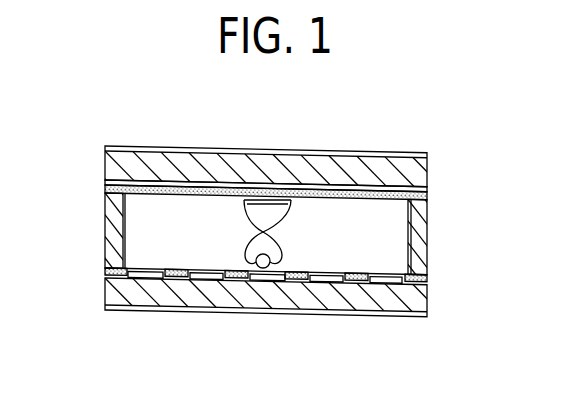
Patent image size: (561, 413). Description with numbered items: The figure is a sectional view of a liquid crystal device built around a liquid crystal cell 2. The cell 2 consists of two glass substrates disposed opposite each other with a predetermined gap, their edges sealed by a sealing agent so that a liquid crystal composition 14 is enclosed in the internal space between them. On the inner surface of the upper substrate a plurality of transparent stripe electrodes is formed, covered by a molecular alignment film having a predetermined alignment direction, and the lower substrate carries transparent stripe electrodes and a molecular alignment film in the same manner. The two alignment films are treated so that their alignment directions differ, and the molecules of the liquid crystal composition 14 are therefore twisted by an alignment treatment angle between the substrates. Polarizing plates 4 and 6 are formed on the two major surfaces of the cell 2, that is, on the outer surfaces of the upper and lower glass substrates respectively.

The liquid crystal cell 2 is at (100, 150).
The polarizing plate 4 is at (124, 146).
The polarizing plate 6 is at (101, 310).
The liquid crystal composition 14 is at (283, 237).